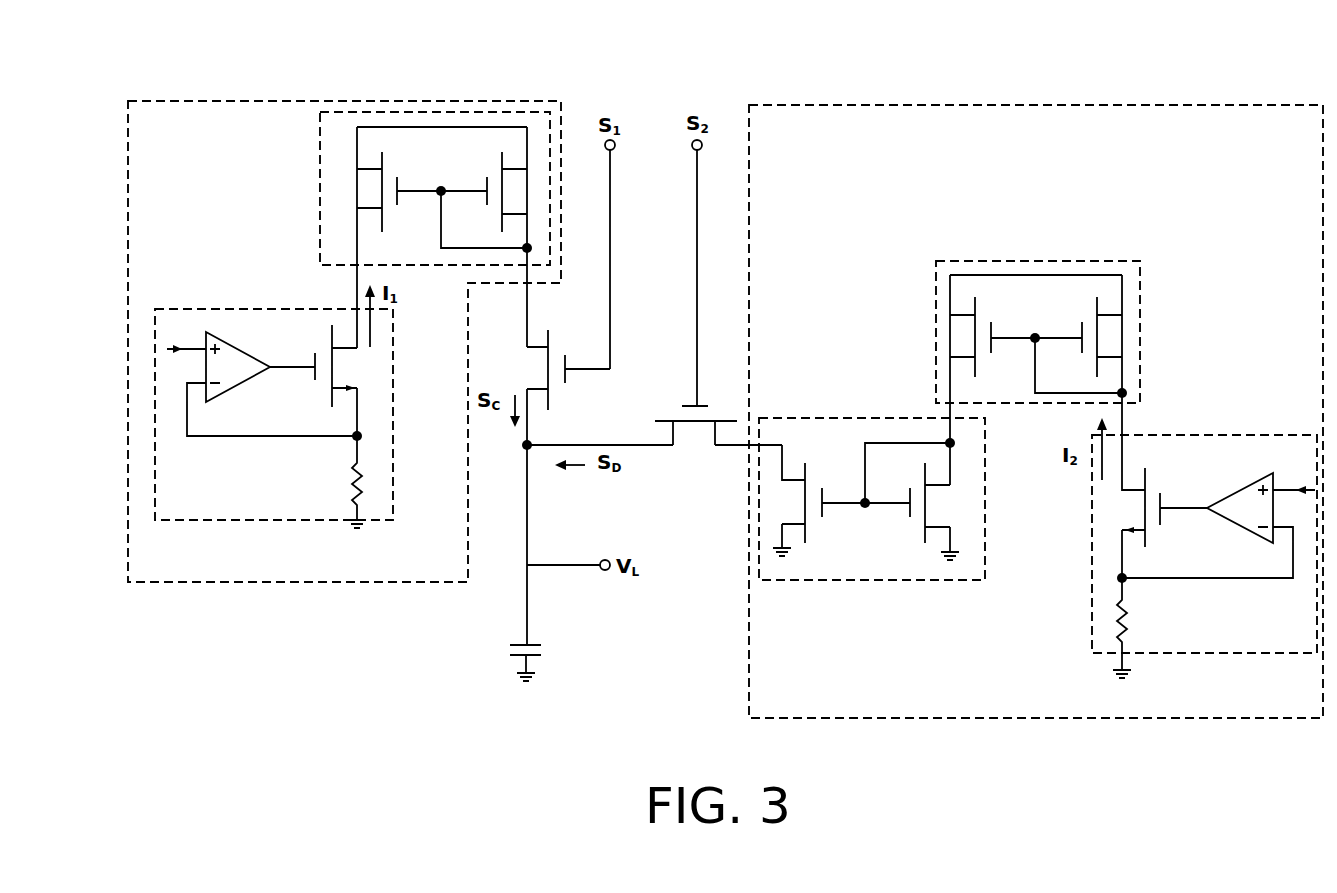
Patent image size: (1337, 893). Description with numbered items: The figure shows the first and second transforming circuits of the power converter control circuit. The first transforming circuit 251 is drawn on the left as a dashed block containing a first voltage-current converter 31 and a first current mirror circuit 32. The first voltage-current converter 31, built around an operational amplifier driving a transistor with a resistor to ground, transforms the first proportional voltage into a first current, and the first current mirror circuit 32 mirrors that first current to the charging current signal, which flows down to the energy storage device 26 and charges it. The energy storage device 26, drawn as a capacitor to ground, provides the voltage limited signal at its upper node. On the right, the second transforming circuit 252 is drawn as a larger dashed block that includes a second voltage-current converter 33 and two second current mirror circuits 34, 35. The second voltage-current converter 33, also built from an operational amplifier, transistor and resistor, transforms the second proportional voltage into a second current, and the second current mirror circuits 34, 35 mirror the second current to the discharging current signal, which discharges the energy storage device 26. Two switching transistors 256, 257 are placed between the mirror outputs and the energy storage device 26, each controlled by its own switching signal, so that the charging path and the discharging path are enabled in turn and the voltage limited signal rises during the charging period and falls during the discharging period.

The first transforming circuit 251 is at (269, 100).
The second transforming circuit 252 is at (957, 105).
The first current mirror circuit 32 is at (318, 205).
The first voltage-current converter 31 is at (393, 431).
The second current mirror circuit 34 is at (1017, 259).
The second current mirror circuit 35 is at (862, 418).
The second voltage-current converter 33 is at (1197, 435).
The first switch transistor 256 is at (565, 383).
The second switch transistor 257 is at (687, 404).
The energy storage device 26 is at (556, 656).